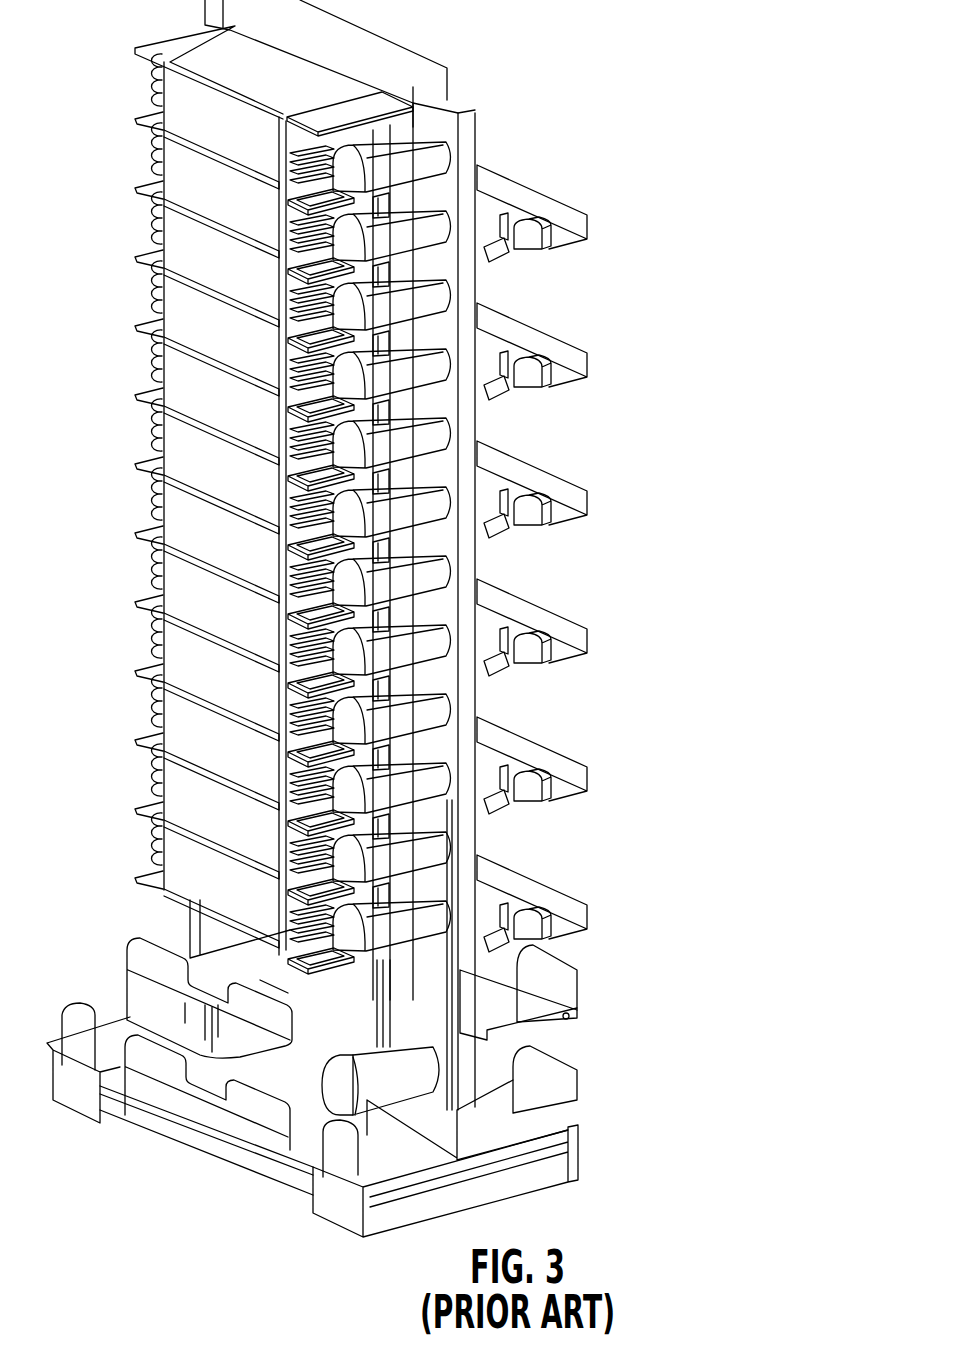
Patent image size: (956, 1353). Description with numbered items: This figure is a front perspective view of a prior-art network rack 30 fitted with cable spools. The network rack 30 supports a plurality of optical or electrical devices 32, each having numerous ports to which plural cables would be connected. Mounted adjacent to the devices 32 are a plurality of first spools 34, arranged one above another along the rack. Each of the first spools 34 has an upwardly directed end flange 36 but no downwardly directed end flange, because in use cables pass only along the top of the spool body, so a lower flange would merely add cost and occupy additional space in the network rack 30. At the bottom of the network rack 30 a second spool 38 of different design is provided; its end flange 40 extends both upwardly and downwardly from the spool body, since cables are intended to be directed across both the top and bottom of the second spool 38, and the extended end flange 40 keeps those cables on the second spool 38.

The network rack 30 is at (553, 727).
The optical or electrical devices 32 is at (190, 114).
The first spools 34 is at (413, 165).
The upwardly directed end flange 36 is at (427, 142).
The second spool 38 is at (407, 1070).
The end flange 40 is at (333, 1082).